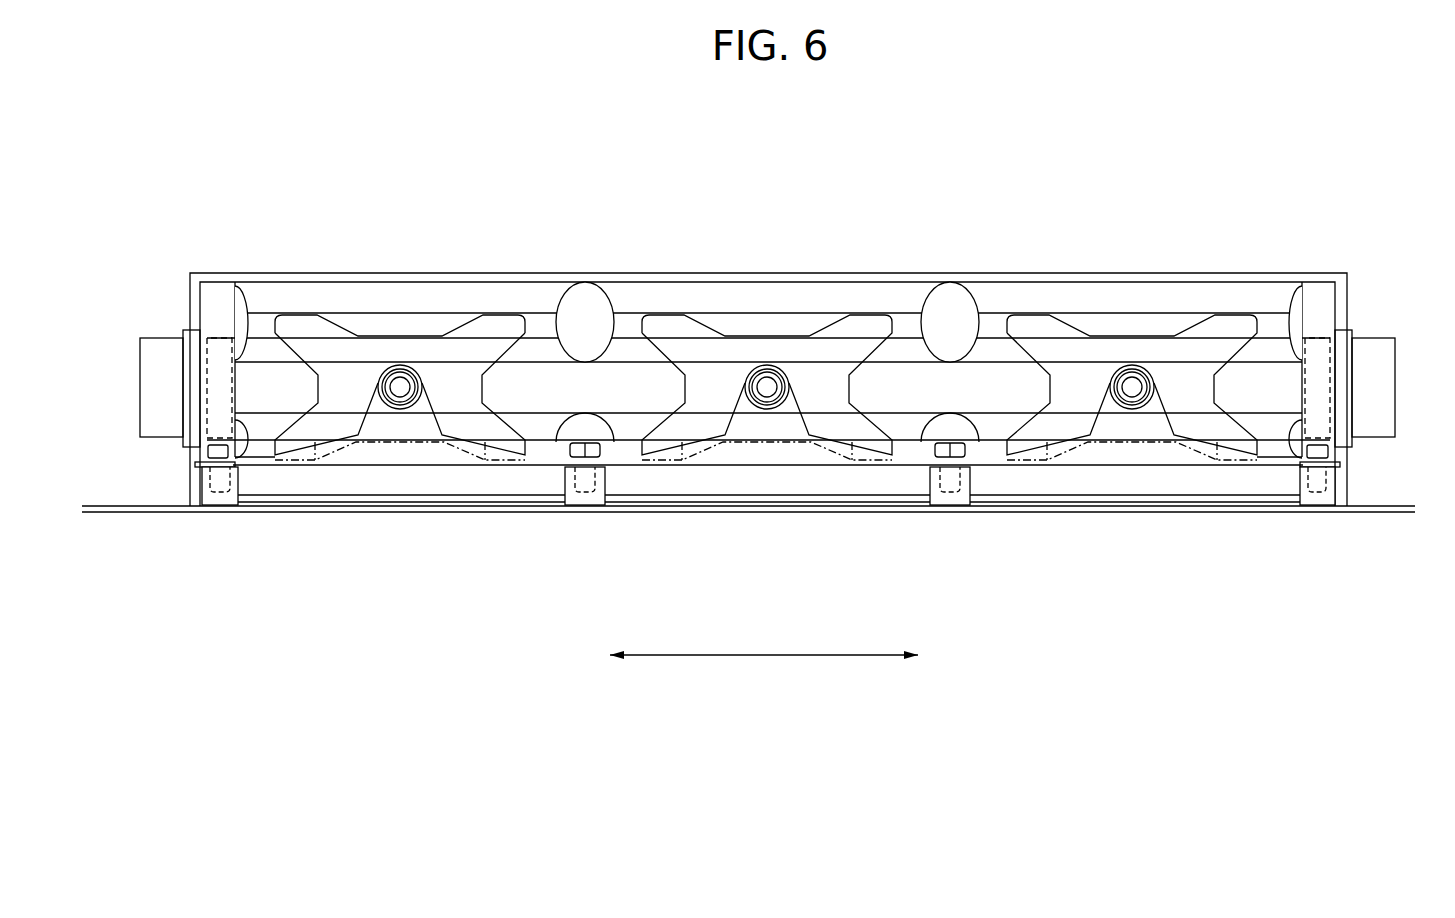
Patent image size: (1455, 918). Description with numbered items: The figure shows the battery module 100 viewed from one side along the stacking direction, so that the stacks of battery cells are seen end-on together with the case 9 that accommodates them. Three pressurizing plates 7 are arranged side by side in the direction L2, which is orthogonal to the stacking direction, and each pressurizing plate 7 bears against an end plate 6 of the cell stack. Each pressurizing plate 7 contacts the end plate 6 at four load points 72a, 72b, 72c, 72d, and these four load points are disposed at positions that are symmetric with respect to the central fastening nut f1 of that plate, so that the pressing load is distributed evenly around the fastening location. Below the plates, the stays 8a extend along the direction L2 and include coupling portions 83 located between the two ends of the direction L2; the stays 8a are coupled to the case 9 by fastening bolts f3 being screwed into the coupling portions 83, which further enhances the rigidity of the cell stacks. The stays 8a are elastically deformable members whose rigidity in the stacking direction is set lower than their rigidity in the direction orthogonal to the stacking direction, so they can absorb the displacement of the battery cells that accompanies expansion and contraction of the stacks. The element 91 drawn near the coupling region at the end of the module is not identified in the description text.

The battery module 100 is at (1082, 160).
The end plate 6 is at (1228, 295).
The pressurizing plate 7 is at (400, 318).
The load point 72a is at (298, 327).
The load point 72b is at (498, 327).
The load point 72c is at (300, 432).
The load point 72d is at (500, 432).
The fastening nut f1 is at (399, 388).
The fastening bolt f3 is at (1316, 440).
The stay 8a is at (1032, 472).
The coupling portion 83 is at (1303, 467).
The leg 91 is at (1317, 500).
The case 9 is at (188, 524).
The direction orthogonal to the stacking direction L2 is at (773, 658).